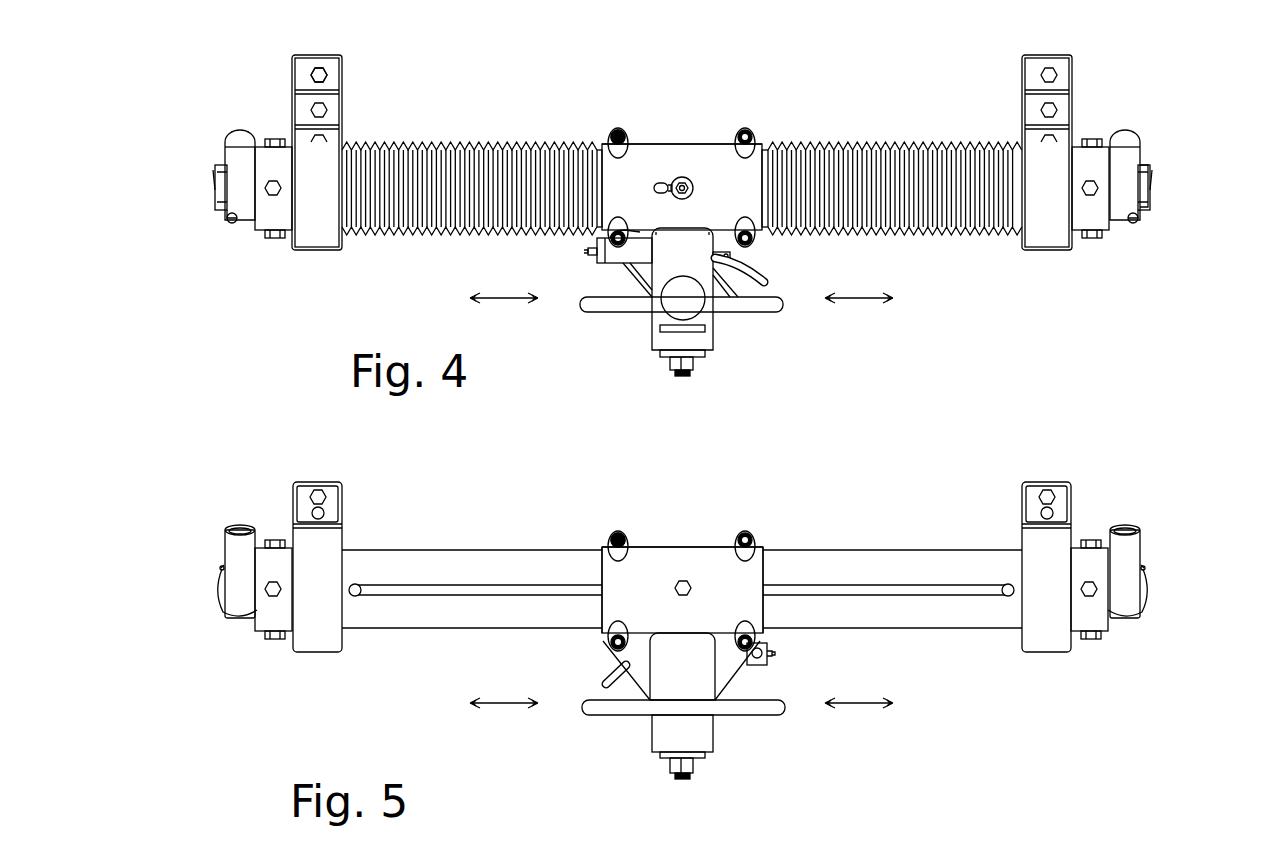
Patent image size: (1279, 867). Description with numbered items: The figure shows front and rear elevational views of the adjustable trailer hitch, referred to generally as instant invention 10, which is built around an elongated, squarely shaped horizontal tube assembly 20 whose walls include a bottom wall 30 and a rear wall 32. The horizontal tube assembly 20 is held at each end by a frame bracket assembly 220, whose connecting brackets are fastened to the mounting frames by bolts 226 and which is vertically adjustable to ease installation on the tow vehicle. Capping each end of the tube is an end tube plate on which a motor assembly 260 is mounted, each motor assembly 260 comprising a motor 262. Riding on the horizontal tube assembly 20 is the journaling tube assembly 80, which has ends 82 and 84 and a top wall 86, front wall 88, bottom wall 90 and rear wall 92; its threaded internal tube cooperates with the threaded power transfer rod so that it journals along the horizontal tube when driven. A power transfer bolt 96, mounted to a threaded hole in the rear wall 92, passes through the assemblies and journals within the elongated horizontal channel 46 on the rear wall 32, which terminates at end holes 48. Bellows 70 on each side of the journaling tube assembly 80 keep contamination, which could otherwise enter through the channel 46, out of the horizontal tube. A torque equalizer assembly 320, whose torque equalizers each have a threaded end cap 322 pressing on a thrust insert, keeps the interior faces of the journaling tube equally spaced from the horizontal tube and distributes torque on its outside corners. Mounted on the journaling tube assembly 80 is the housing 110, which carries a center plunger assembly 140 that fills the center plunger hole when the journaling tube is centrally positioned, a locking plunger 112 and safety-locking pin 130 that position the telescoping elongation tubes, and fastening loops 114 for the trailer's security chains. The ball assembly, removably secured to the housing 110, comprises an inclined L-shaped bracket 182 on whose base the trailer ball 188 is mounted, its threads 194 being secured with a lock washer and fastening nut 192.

In FIG. 4, the instant invention 10 is at (1160, 88).
In FIG. 5, the instant invention 10 is at (1113, 418).
In FIG. 5, the horizontal tube assembly 20 is at (526, 543).
In FIG. 5, the bottom wall 30 is at (940, 635).
In FIG. 5, the rear wall 32 is at (870, 570).
In FIG. 5, the elongated horizontal channel 46 is at (425, 587).
In FIG. 5, the end holes 48 is at (355, 582).
In FIG. 4, the bellows 70 is at (425, 142).
In FIG. 4, the journaling tube assembly 80 is at (673, 136).
In FIG. 4, the end 82 is at (763, 178).
In FIG. 5, the end 82 is at (600, 605).
In FIG. 4, the end 84 is at (597, 178).
In FIG. 5, the end 84 is at (762, 600).
In FIG. 4, the top wall 86 is at (693, 144).
In FIG. 5, the top wall 86 is at (718, 547).
In FIG. 4, the front wall 88 is at (745, 190).
In FIG. 4, the bottom wall 90 is at (733, 256).
In FIG. 5, the bottom wall 90 is at (720, 635).
In FIG. 5, the rear wall 92 is at (665, 560).
In FIG. 5, the power transfer bolt 96 is at (688, 580).
In FIG. 5, the housing 110 is at (668, 658).
In FIG. 4, the locking plunger 112 is at (597, 253).
In FIG. 5, the locking plunger 112 is at (770, 648).
In FIG. 4, the fastening loops 114 is at (607, 312).
In FIG. 5, the fastening loops 114 is at (763, 710).
In FIG. 4, the safety-locking pin 130 is at (768, 285).
In FIG. 5, the safety-locking pin 130 is at (600, 685).
In FIG. 4, the center plunger assembly 140 is at (698, 166).
In FIG. 4, the bracket 182 is at (682, 289).
In FIG. 4, the trailer ball 188 is at (692, 300).
In FIG. 4, the fastening nut 192 is at (702, 365).
In FIG. 5, the fastening nut 192 is at (700, 768).
In FIG. 5, the threads 194 is at (680, 781).
In FIG. 4, the frame bracket assembly 220 is at (284, 78).
In FIG. 5, the frame bracket assembly 220 is at (286, 487).
In FIG. 4, the bolts 226 is at (335, 75).
In FIG. 4, the motor assembly 260 is at (222, 136).
In FIG. 5, the motor assembly 260 is at (222, 547).
In FIG. 4, the motors 262 is at (1130, 151).
In FIG. 4, the torque equalizer assembly 320 is at (603, 128).
In FIG. 5, the torque equalizer assembly 320 is at (766, 536).
In FIG. 4, the threaded end cap 322 is at (620, 128).
In FIG. 5, the threaded end cap 322 is at (610, 535).